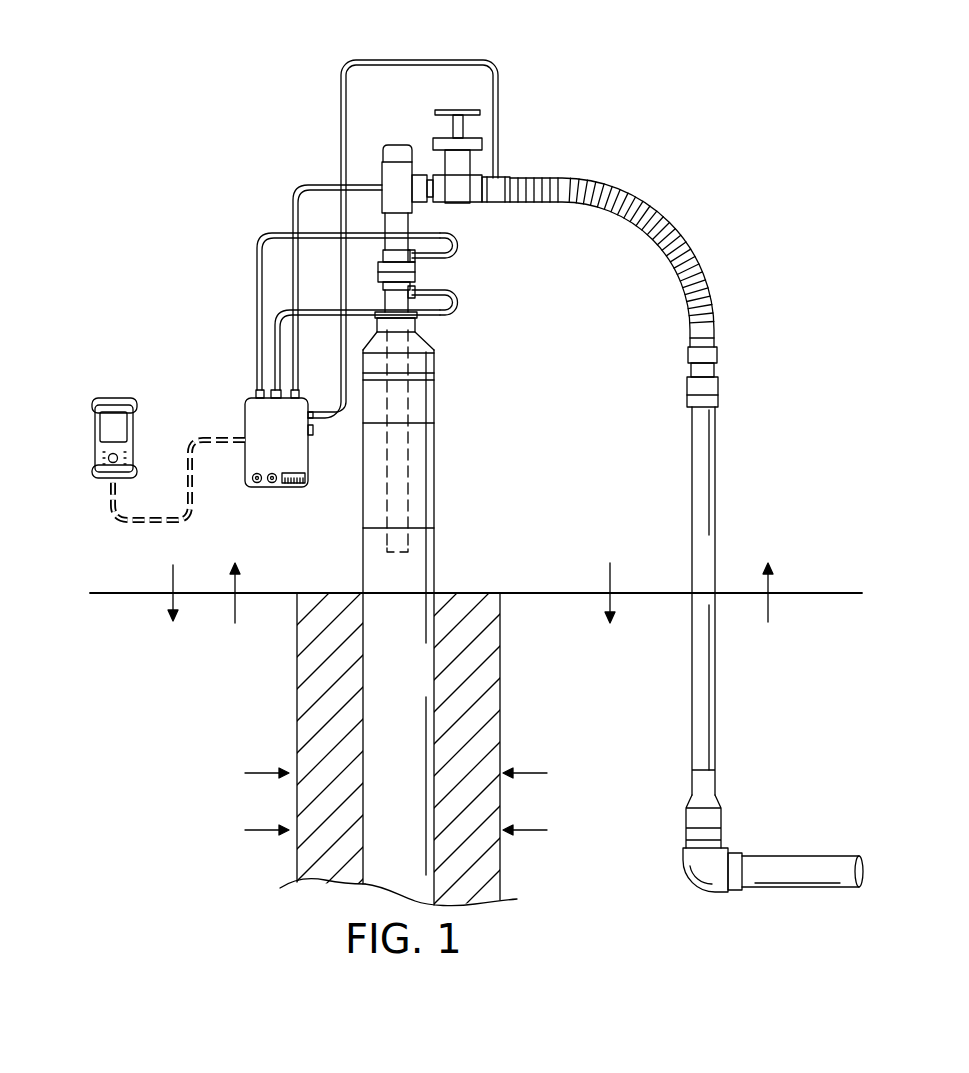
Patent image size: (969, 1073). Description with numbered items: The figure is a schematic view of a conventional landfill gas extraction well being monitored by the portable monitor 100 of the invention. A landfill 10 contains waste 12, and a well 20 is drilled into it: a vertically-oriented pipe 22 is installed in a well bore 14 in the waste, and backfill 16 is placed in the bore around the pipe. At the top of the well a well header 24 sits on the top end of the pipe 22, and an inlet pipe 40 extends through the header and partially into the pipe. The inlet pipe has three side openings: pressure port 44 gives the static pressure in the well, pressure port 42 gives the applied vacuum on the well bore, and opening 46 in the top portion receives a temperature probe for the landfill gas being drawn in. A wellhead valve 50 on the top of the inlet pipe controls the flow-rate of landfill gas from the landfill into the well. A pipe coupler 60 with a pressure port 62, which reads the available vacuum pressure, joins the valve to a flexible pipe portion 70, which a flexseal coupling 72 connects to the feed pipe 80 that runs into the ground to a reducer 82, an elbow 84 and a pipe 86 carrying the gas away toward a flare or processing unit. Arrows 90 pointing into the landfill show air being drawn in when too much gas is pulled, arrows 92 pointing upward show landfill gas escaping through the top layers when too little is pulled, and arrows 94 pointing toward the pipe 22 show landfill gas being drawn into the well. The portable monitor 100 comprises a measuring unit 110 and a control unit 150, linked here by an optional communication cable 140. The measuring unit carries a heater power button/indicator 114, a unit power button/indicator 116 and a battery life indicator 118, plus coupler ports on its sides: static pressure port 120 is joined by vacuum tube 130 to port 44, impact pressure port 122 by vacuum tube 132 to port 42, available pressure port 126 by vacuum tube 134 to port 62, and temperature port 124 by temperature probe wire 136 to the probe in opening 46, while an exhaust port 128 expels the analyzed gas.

The landfill 10 is at (797, 585).
The waste 12 is at (538, 613).
The well bore 14 is at (503, 718).
The backfill 16 is at (308, 708).
The well 20 is at (450, 422).
The pipe 22 is at (437, 560).
The well header 24 is at (432, 355).
The inlet pipe 40 is at (457, 311).
The pressure port 42 is at (413, 287).
The pressure port 44 is at (457, 237).
The opening 46 is at (383, 186).
The wellhead valve 50 is at (465, 163).
The pipe coupler 60 is at (503, 203).
The pressure port 62 is at (494, 178).
The flexible pipe portion 70 is at (672, 256).
The flexseal coupling 72 is at (717, 392).
The feed pipe 80 is at (715, 498).
The reducer 82 is at (722, 815).
The elbow 84 is at (695, 878).
The pipe 86 is at (805, 855).
The arrows 90 is at (173, 575).
The arrows 92 is at (235, 612).
The arrows 94 is at (245, 830).
The portable monitor 100 is at (180, 348).
The measuring unit 110 is at (236, 409).
The heater power button/indicator 114 is at (255, 483).
The unit power button/indicator 116 is at (271, 484).
The battery life indicator 118 is at (292, 484).
The coupler port 120 is at (256, 391).
The coupler port 122 is at (272, 391).
The coupler port 124 is at (298, 391).
The coupler port 126 is at (313, 420).
The exhaust port 128 is at (313, 434).
The vacuum tube 130 is at (257, 247).
The vacuum tube 132 is at (317, 305).
The vacuum tube 134 is at (430, 60).
The temperature probe wire 136 is at (293, 205).
The communication cable 140 is at (143, 527).
The control unit 150 is at (95, 385).